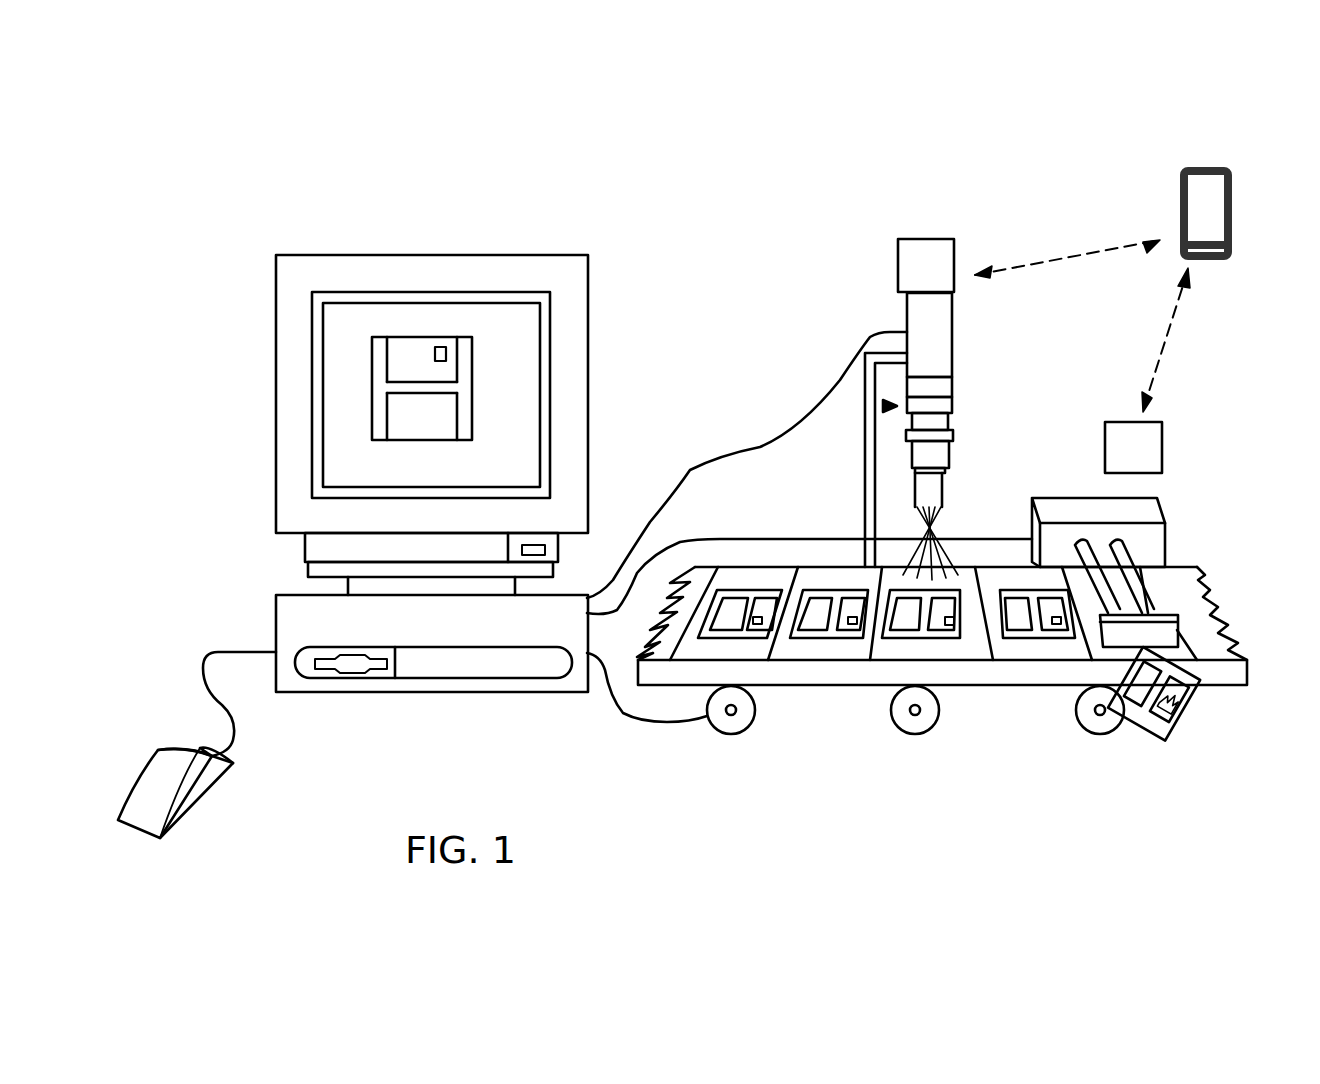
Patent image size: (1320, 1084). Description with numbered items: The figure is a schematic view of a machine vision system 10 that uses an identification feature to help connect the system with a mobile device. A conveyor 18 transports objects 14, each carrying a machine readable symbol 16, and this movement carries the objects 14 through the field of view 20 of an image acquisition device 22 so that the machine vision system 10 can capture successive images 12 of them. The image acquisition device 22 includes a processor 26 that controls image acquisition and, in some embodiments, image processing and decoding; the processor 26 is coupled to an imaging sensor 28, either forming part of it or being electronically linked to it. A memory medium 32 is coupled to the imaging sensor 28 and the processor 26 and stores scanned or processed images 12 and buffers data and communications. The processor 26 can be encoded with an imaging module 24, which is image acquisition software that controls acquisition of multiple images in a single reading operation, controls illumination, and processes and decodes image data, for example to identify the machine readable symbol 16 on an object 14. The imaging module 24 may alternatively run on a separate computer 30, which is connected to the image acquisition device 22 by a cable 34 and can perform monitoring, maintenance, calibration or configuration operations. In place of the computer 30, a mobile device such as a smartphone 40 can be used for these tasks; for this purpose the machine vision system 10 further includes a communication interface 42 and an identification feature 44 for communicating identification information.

The machine vision system 10 is at (705, 755).
The image 12 is at (420, 337).
The object 14 is at (942, 640).
The machine readable symbol 16 is at (440, 347).
The conveyor 18 is at (832, 672).
The field of view 20 is at (950, 527).
The image acquisition device 22 is at (952, 337).
The imaging module 24 is at (876, 406).
The processor 26 is at (947, 406).
The imaging sensor 28 is at (937, 424).
The computer 30 is at (276, 617).
The memory medium 32 is at (947, 388).
The cable 34 is at (748, 452).
The smartphone 40 is at (1182, 228).
The communication interface 42 is at (960, 245).
The identification feature 44 is at (1162, 437).